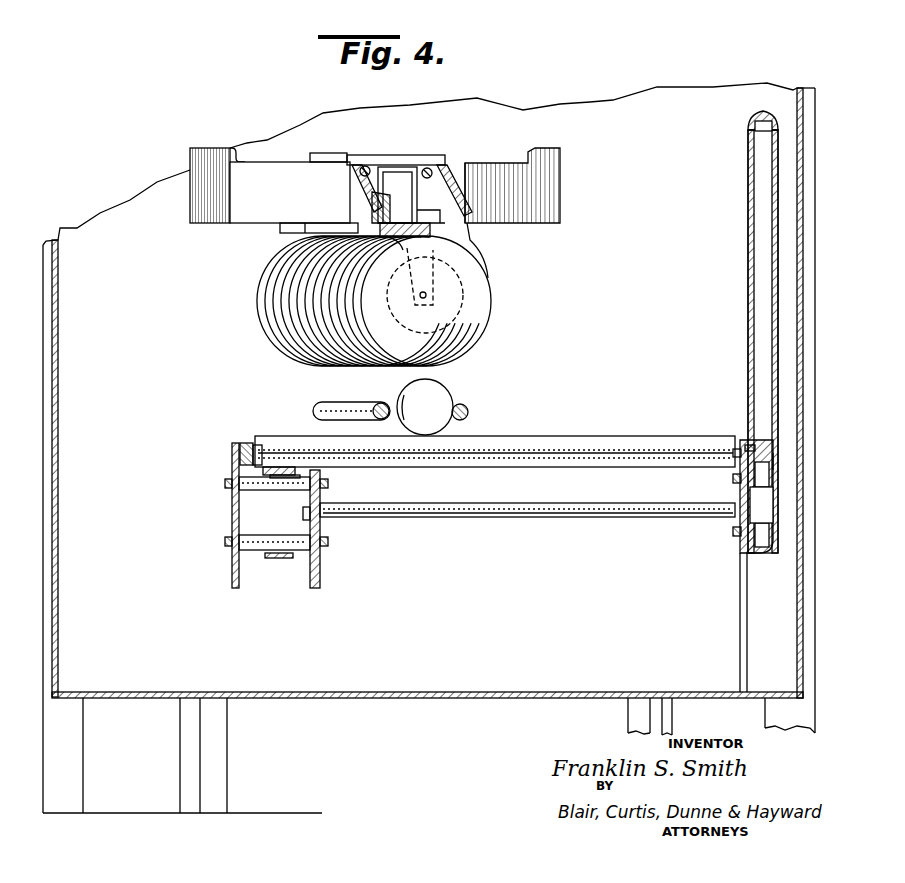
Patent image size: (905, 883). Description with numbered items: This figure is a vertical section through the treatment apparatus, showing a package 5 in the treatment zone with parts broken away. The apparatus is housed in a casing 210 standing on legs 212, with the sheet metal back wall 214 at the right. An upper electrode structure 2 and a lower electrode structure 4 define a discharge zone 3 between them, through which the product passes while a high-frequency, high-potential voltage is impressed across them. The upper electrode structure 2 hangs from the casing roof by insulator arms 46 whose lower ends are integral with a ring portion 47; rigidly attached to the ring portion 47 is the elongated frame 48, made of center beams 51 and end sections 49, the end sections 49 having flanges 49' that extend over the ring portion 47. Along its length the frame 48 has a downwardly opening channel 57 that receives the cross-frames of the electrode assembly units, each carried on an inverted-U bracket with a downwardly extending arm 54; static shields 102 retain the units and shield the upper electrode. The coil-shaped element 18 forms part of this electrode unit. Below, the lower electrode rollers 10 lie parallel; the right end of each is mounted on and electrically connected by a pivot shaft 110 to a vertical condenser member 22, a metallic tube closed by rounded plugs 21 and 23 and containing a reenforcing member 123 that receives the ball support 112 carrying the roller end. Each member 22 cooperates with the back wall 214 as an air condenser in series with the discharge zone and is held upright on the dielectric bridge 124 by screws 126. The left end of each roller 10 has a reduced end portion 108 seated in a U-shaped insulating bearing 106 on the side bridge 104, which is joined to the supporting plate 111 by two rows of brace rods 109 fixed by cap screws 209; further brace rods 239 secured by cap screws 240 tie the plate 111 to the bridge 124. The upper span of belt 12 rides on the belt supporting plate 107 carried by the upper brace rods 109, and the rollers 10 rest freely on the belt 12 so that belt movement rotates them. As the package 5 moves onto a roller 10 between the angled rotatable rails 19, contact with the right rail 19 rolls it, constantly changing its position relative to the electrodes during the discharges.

The upper electrode structure 2 is at (238, 268).
The discharge zone 3 is at (310, 374).
The lower electrode structure 4 is at (205, 428).
The package 5 is at (436, 393).
The electrode roller 10 is at (467, 467).
The belt 12 is at (278, 468).
The coil spring 18 is at (283, 306).
The rotatable rail 19 is at (318, 407).
The rounded plug 21 is at (756, 118).
The vertical condenser member 22 is at (748, 247).
The rounded plug 23 is at (764, 553).
The downwardly extending arm 46 is at (226, 148).
The ring portion 47 is at (502, 213).
The elongated frame 48 is at (338, 150).
The end section 49 is at (448, 176).
The flange 49' is at (396, 166).
The center beam 51 is at (324, 230).
The downwardly extending arm 54 is at (430, 278).
The channel 57 is at (378, 218).
The static shield 102 is at (484, 304).
The side bridge 104 is at (231, 506).
The bearing 106 is at (233, 461).
The belt supporting plate 107 is at (288, 480).
The reduced end portion 108 is at (250, 444).
The brace rod 109 is at (263, 490).
The pivot shaft 110 is at (746, 448).
The supporting plate 111 is at (322, 569).
The ball support 112 is at (755, 446).
The reenforcing member 123 is at (766, 458).
The dielectric bridge structure 124 is at (742, 609).
The screw 126 is at (735, 479).
The cap screw 209 is at (230, 482).
The casing 210 is at (100, 213).
The leg 212 is at (72, 745).
The back wall 214 is at (800, 100).
The brace rod 239 is at (538, 515).
The cap screw 240 is at (306, 514).